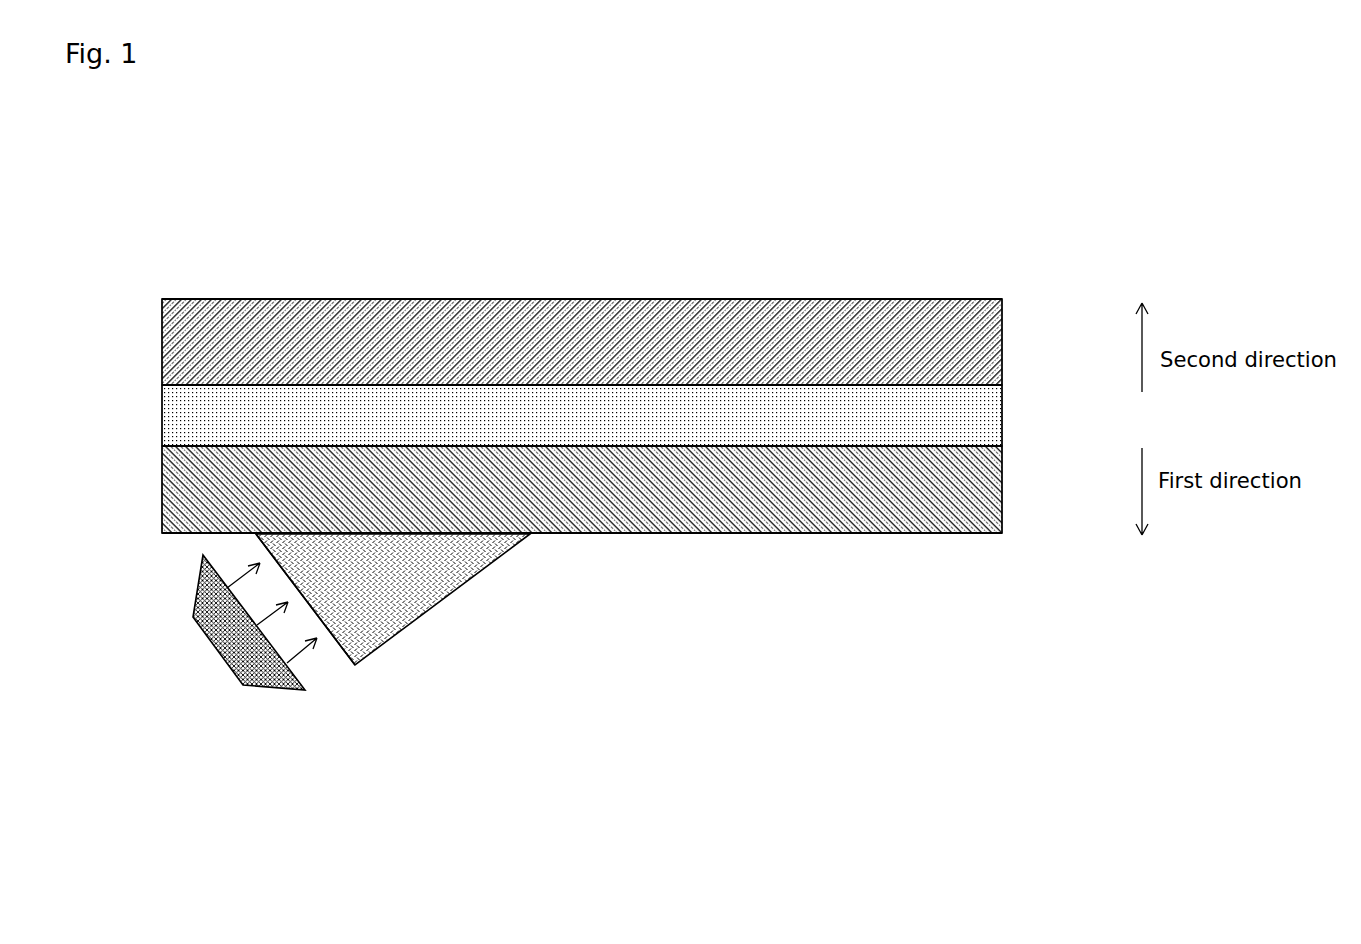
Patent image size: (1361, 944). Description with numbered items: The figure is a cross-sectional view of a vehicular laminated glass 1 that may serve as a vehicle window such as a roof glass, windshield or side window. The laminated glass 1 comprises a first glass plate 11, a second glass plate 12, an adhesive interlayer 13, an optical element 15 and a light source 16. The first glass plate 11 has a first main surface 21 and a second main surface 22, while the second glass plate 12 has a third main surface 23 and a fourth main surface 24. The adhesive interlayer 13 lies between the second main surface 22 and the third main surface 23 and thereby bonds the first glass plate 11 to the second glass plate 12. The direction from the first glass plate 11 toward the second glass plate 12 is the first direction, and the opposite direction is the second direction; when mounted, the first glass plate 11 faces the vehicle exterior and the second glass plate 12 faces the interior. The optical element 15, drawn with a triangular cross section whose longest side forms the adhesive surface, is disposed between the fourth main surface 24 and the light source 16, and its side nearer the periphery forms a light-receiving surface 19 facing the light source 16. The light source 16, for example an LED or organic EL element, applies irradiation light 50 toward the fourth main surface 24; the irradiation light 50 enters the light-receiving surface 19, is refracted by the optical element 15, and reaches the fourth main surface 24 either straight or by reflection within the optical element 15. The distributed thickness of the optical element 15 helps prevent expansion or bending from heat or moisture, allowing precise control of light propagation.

The vehicular laminated glass 1 is at (992, 162).
The first glass plate 11 is at (162, 333).
The second glass plate 12 is at (162, 490).
The adhesive interlayer 13 is at (162, 410).
The optical element 15 is at (432, 593).
The light source 16 is at (217, 653).
The light-receiving surface 19 is at (345, 653).
The first main surface 21 is at (1002, 300).
The second main surface 22 is at (975, 388).
The third main surface 23 is at (975, 448).
The fourth main surface 24 is at (975, 535).
The irradiation light 50 is at (308, 655).